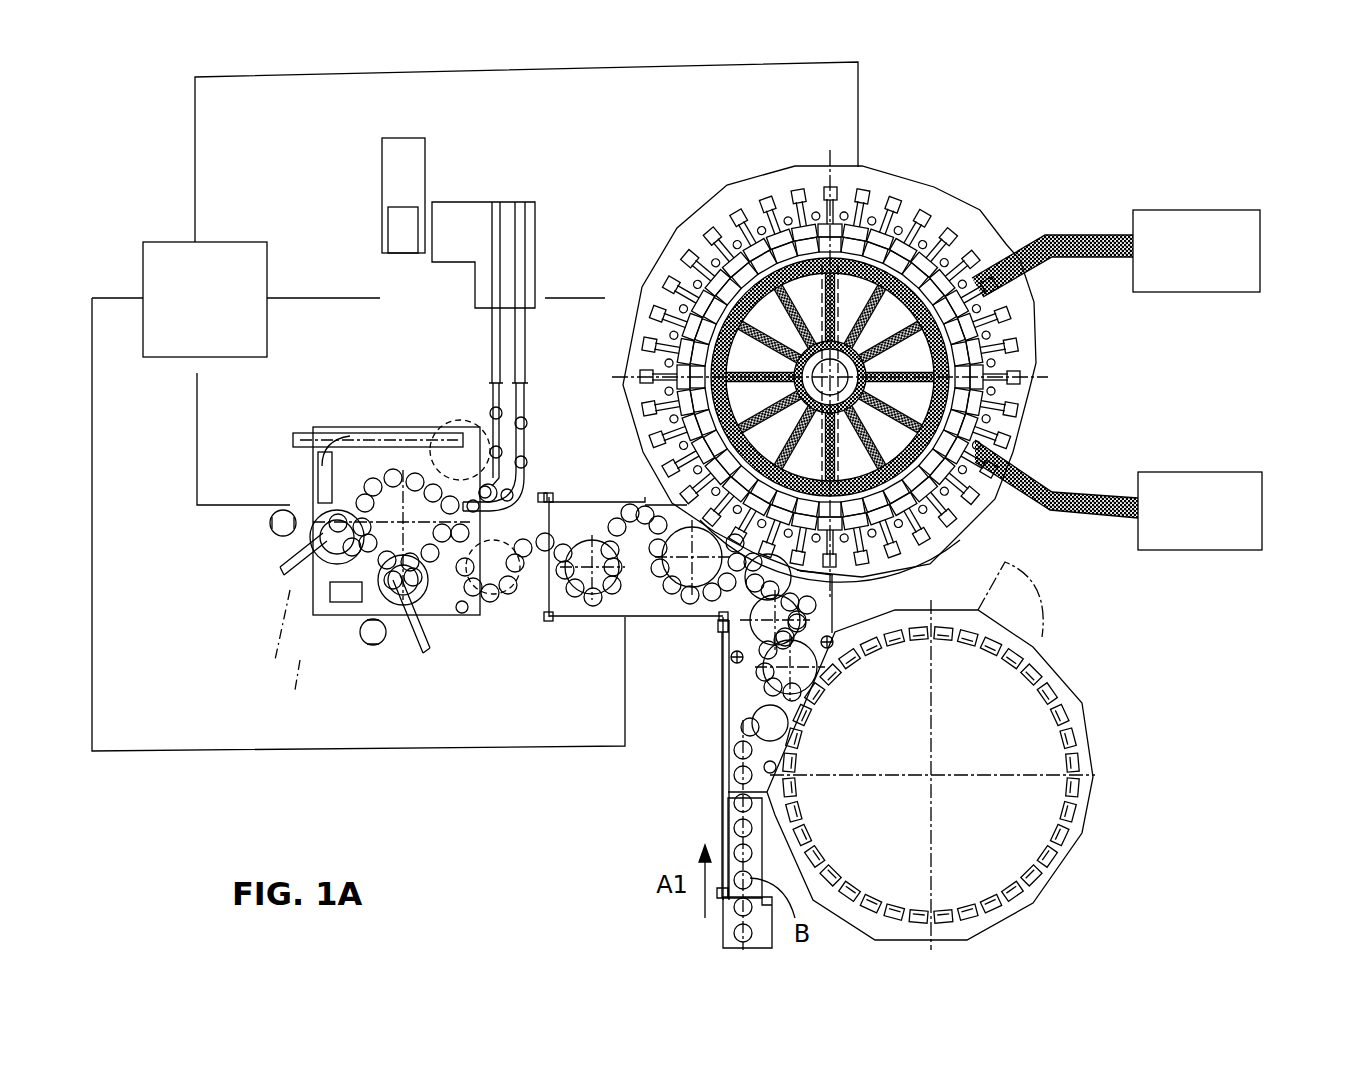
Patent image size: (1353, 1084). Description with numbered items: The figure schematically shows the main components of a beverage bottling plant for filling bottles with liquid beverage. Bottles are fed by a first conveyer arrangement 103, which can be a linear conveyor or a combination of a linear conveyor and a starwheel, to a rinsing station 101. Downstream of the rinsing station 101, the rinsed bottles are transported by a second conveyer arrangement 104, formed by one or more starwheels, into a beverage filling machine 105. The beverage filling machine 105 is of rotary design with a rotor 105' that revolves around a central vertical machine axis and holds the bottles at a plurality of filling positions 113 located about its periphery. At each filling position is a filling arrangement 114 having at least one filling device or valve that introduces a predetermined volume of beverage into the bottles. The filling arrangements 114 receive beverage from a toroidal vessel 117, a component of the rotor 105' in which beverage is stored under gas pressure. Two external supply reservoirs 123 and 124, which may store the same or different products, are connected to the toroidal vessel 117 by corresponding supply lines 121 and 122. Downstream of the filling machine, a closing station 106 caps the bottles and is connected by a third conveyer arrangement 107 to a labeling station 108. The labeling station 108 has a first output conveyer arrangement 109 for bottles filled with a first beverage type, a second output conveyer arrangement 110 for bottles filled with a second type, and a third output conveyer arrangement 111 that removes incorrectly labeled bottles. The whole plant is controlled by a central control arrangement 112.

The rinsing station 101 is at (1107, 667).
The first conveyer arrangement 103 is at (763, 860).
The second conveyer arrangement 104 is at (735, 690).
The beverage filling machine 105 is at (897, 375).
The rotor 105' is at (829, 356).
The closing station 106 is at (610, 495).
The third conveyer arrangement 107 is at (551, 625).
The labeling station 108 is at (343, 660).
The first output conveyer arrangement 109 is at (527, 404).
The second output conveyer arrangement 110 is at (490, 345).
The third output conveyer arrangement 111 is at (350, 430).
The central control arrangement 112 is at (205, 299).
The filling positions 113 is at (1013, 307).
The filling arrangement 114 is at (1022, 408).
The toroidal vessel 117 is at (962, 528).
The supply line 121 is at (1074, 235).
The supply line 122 is at (1084, 495).
The supply reservoir 123 is at (1250, 262).
The supply reservoir 124 is at (1258, 523).